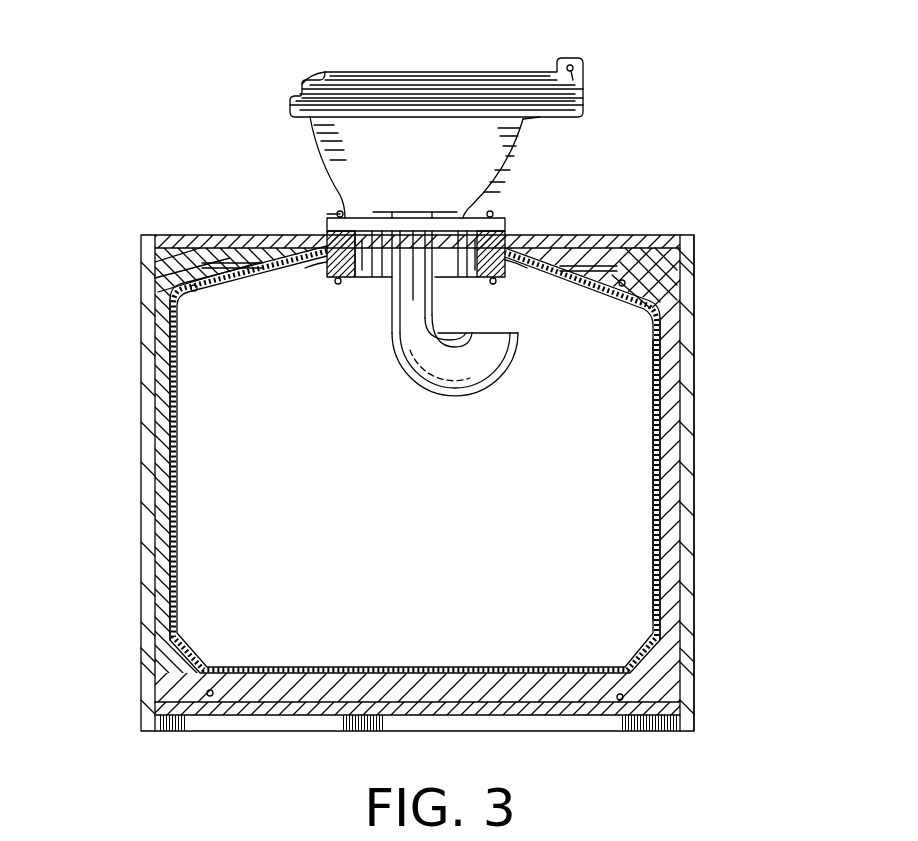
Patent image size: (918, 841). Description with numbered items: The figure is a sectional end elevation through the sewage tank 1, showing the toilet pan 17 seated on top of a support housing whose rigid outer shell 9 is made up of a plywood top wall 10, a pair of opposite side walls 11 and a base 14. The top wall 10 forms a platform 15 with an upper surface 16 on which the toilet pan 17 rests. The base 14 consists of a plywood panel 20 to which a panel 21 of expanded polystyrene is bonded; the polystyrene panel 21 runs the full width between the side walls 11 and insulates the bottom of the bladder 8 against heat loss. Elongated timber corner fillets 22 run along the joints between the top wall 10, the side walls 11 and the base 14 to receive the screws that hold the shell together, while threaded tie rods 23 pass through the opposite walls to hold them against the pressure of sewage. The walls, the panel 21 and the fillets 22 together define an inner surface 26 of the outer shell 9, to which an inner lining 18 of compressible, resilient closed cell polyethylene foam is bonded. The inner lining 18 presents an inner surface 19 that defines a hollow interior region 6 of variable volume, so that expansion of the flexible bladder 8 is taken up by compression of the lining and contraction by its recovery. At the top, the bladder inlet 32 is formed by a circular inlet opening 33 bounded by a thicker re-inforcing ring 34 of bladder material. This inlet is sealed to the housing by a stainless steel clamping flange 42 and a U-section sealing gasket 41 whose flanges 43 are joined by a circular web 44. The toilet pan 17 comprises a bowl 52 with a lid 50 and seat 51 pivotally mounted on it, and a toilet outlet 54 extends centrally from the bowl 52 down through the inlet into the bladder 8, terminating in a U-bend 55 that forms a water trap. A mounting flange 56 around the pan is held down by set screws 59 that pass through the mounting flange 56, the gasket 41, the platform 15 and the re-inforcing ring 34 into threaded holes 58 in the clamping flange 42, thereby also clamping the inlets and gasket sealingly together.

The sewage tank 1 is at (628, 98).
The hollow interior region 6 is at (172, 290).
The bladder 8 is at (170, 518).
The outer shell 9 is at (688, 372).
The top wall 10 is at (640, 258).
The side walls 11 is at (695, 487).
The base 14 is at (490, 703).
The platform 15 is at (665, 262).
The upper surface 16 is at (610, 255).
The toilet pan 17 is at (372, 110).
The inner lining 18 is at (565, 252).
The inner surface 19 is at (172, 502).
The plywood panel 20 is at (318, 712).
The panel 21 is at (432, 703).
The corner fillets 22 is at (690, 262).
The tie rods 23 is at (222, 262).
The inner surface 26 is at (656, 460).
The bladder inlet 32 is at (345, 278).
The inlet opening 33 is at (463, 265).
The re-inforcing ring 34 is at (528, 268).
The sealing gasket 41 is at (375, 280).
The clamping flange 42 is at (392, 300).
The flanges 43 is at (505, 233).
The circular web 44 is at (378, 218).
The lid 50 is at (470, 80).
The seat 51 is at (318, 82).
The bowl 52 is at (320, 140).
The toilet outlet 54 is at (415, 305).
The U-bend 55 is at (450, 370).
The mounting flange 56 is at (405, 218).
The threaded holes 58 is at (335, 270).
The set screws 59 is at (333, 214).